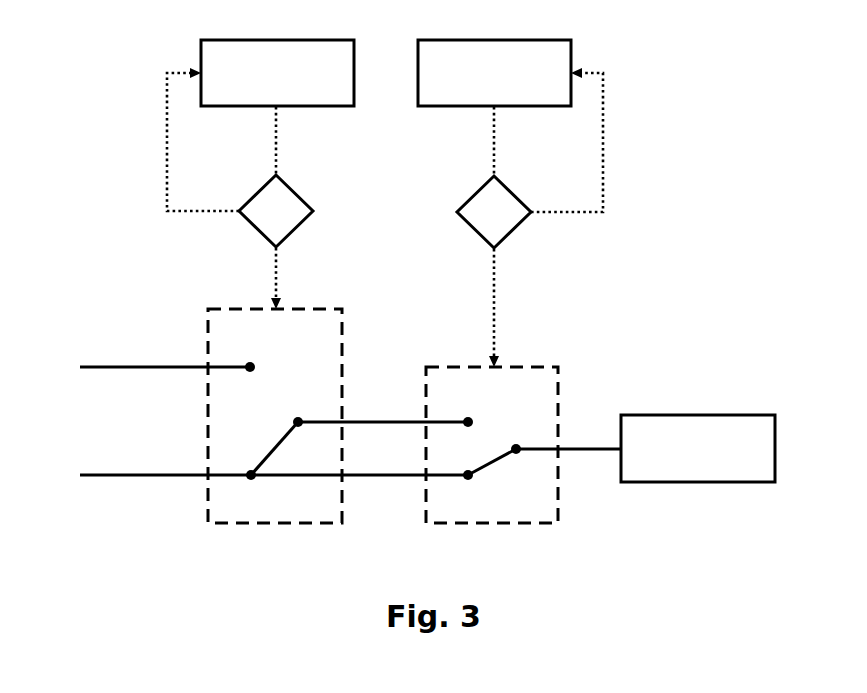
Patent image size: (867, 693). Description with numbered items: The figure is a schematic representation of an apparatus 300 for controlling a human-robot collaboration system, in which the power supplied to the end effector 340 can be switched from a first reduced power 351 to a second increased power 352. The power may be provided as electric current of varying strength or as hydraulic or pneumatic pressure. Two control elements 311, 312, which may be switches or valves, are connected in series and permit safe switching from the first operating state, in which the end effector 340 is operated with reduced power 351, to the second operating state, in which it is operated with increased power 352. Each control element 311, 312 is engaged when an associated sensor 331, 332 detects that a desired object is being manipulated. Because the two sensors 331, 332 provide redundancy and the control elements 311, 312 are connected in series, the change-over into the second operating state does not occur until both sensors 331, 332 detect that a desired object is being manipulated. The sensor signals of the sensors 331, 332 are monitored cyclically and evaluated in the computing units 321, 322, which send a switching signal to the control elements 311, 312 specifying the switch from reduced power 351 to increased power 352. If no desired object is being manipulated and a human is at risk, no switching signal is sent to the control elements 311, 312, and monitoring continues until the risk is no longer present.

The apparatus 300 is at (85, 27).
The control element 311 is at (231, 308).
The control element 312 is at (447, 366).
The computing unit 321 is at (276, 211).
The computing unit 322 is at (494, 212).
The sensor 331 is at (277, 73).
The sensor 332 is at (494, 73).
The end effector 340 is at (698, 448).
The first reduced power 351 is at (276, 465).
The second increased power 352 is at (167, 356).